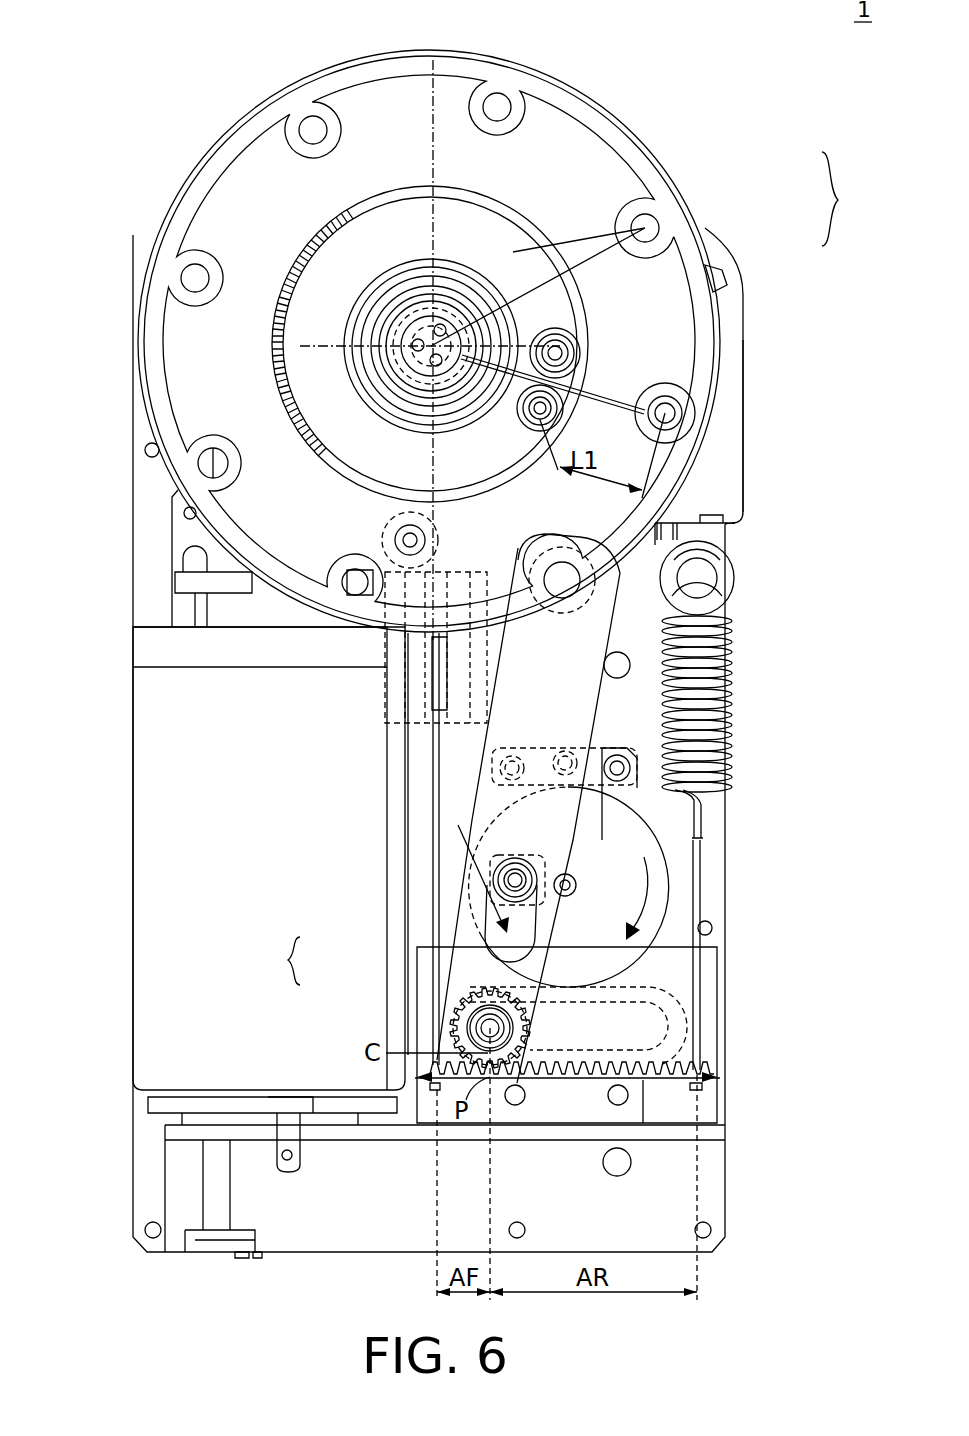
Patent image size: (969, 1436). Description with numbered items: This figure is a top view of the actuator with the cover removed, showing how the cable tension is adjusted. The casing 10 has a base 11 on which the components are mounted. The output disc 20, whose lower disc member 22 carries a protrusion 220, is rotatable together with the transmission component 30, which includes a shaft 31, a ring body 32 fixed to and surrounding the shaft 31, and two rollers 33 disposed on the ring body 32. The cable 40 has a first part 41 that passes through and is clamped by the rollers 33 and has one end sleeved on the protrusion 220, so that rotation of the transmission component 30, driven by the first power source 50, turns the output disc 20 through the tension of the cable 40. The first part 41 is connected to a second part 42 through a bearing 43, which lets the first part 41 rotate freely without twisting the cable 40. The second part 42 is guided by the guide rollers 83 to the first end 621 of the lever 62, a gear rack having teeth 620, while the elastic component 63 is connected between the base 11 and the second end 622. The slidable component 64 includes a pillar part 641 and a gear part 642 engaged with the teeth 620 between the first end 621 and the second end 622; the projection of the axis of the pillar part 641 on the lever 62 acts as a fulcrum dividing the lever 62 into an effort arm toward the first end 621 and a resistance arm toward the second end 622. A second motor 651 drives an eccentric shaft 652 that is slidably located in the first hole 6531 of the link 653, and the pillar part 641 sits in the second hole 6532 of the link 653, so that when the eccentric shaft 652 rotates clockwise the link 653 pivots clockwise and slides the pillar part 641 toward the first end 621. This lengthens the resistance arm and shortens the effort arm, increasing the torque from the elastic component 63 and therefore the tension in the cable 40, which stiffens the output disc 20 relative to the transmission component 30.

The casing 10 is at (120, 549).
The base 11 is at (147, 582).
The output disc 20 is at (427, 341).
The lower disc member 22 is at (230, 232).
The transmission component 30 is at (647, 289).
The shaft 31 is at (445, 290).
The ring body 32 is at (470, 270).
The rollers 33 is at (552, 392).
The cable 40 is at (746, 340).
The first part 41 is at (627, 396).
The second part 42 is at (436, 760).
The bearing 43 is at (431, 250).
The first power source 50 is at (131, 953).
The lever 62 is at (561, 1035).
The elastic component 63 is at (733, 716).
The slidable component 64 is at (398, 998).
The guide rollers 83 is at (432, 727).
The protrusion 220 is at (692, 410).
The teeth 620 is at (582, 1056).
The first end 621 is at (414, 1077).
The second end 622 is at (720, 1077).
The pillar part 641 is at (464, 1008).
The gear part 642 is at (452, 1026).
The second motor 651 is at (636, 771).
The eccentric shaft 652 is at (498, 835).
The link 653 is at (570, 685).
The first hole 6531 is at (493, 880).
The second hole 6532 is at (510, 995).